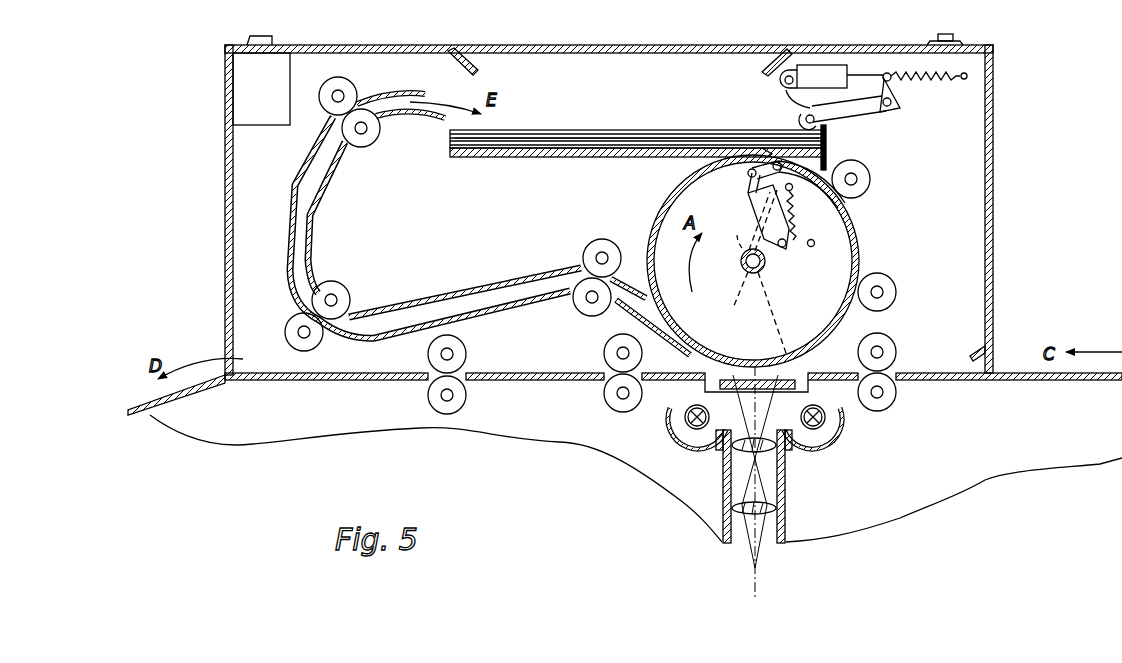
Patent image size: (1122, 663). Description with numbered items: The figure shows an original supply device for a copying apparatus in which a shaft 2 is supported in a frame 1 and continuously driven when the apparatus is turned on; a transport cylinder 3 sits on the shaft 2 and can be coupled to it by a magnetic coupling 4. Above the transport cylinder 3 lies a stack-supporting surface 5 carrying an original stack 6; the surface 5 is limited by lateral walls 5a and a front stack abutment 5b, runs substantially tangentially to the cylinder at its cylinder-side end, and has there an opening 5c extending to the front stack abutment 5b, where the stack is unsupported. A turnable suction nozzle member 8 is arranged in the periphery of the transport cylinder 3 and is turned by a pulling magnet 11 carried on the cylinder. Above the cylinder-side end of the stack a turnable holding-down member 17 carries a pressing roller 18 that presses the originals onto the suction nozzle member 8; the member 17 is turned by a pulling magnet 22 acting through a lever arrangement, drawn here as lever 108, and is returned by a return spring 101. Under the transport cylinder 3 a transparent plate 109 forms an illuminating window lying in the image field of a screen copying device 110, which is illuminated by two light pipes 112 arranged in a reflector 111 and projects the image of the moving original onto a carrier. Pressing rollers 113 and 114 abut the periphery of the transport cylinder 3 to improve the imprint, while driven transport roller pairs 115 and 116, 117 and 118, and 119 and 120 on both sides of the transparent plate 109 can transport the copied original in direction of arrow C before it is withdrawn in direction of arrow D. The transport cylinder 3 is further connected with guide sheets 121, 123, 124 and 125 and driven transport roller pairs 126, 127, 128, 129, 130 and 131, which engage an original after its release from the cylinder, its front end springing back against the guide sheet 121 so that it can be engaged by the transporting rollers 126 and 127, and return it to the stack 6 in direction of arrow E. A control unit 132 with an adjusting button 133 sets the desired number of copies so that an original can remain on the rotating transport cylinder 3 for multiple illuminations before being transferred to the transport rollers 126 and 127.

The frame 1 is at (981, 232).
The shaft 2 is at (773, 262).
The transport cylinder 3 is at (856, 251).
The magnetic coupling 4 is at (757, 273).
The stack-supporting surface 5 is at (514, 156).
The lateral walls 5a is at (536, 130).
The front stack abutment 5b is at (828, 140).
The opening 5c is at (768, 150).
The original stack 6 is at (606, 140).
The suction nozzle member 8 is at (846, 204).
The pulling magnet 11 is at (756, 206).
The holding-down member 17 is at (790, 108).
The pressing roller 18 is at (803, 115).
The pulling magnet 22 is at (826, 64).
The return spring 101 is at (930, 58).
The bell crank lever 108 is at (892, 102).
The transparent plate 109 is at (798, 374).
The screen copying device 110 is at (786, 498).
The reflector 111 is at (702, 446).
The light pipes 112 is at (683, 422).
The pressing roller 113 is at (870, 177).
The pressing roller 114 is at (890, 290).
The transport roller 115 is at (890, 393).
The transport roller 116 is at (890, 352).
The transport roller 117 is at (604, 397).
The transport roller 118 is at (604, 353).
The transport roller 119 is at (463, 404).
The transport roller 120 is at (462, 350).
The guide sheet 121 is at (665, 345).
The guide sheet 123 is at (292, 207).
The guide sheet 124 is at (322, 226).
The guide sheet 125 is at (410, 118).
The transport roller 126 is at (578, 314).
The transport roller 127 is at (600, 244).
The transport roller 128 is at (300, 333).
The transport roller 129 is at (345, 296).
The transport roller 130 is at (367, 143).
The transport roller 131 is at (352, 84).
The control unit 132 is at (247, 99).
The adjusting button 133 is at (270, 41).